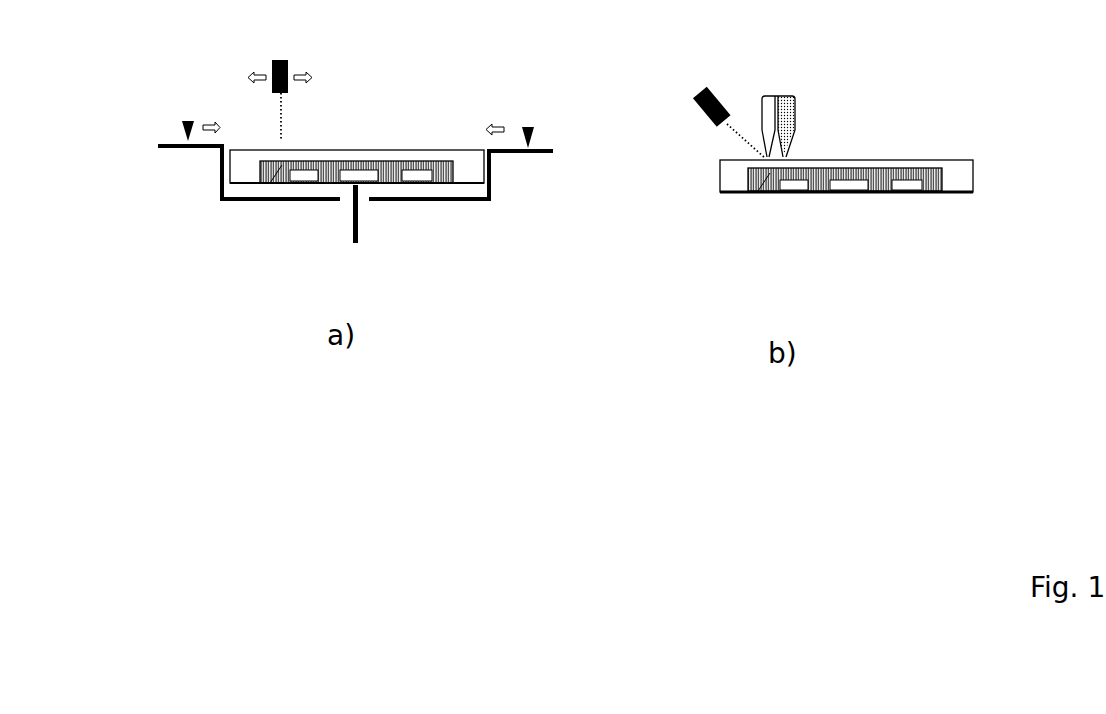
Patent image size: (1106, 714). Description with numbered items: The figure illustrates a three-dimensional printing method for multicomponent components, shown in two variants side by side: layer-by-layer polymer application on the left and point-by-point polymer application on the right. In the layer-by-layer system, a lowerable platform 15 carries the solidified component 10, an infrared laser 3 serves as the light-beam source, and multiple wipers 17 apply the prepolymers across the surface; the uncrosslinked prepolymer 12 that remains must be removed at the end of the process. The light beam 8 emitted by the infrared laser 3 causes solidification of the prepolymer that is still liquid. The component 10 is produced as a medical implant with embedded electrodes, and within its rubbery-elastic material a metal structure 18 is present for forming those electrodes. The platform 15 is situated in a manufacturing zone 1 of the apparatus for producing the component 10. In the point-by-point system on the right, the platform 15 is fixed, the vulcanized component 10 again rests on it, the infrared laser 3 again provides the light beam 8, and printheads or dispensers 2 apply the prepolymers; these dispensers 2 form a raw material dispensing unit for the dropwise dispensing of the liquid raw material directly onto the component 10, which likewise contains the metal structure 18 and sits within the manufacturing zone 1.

The manufacturing zone 1 is at (416, 187).
The printheads/dispensers 2 is at (788, 105).
The infrared laser 3 is at (288, 63).
The light beam 8 is at (282, 120).
The component 10 is at (408, 157).
The uncrosslinked prepolymer 12 is at (233, 167).
The platform 15 is at (468, 183).
The wipers 17 is at (187, 120).
The metal structure 18 is at (277, 170).